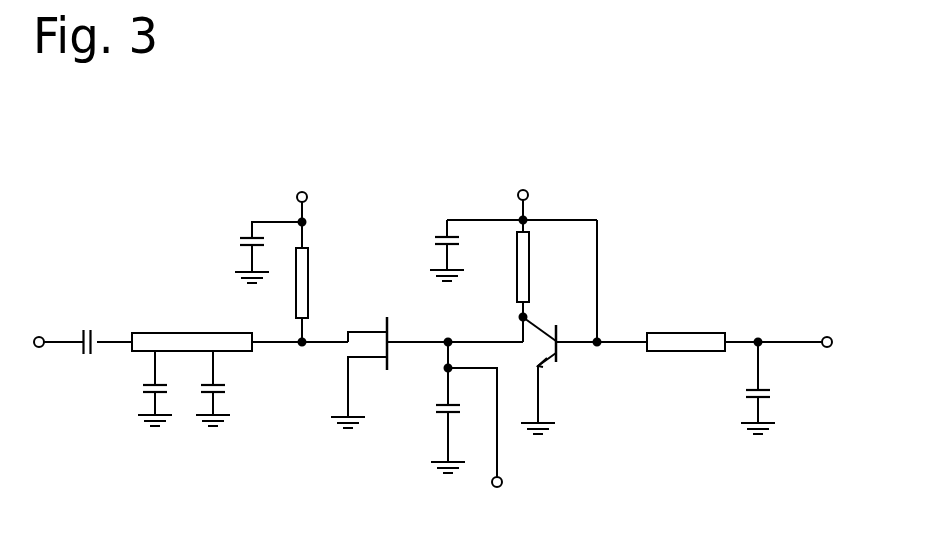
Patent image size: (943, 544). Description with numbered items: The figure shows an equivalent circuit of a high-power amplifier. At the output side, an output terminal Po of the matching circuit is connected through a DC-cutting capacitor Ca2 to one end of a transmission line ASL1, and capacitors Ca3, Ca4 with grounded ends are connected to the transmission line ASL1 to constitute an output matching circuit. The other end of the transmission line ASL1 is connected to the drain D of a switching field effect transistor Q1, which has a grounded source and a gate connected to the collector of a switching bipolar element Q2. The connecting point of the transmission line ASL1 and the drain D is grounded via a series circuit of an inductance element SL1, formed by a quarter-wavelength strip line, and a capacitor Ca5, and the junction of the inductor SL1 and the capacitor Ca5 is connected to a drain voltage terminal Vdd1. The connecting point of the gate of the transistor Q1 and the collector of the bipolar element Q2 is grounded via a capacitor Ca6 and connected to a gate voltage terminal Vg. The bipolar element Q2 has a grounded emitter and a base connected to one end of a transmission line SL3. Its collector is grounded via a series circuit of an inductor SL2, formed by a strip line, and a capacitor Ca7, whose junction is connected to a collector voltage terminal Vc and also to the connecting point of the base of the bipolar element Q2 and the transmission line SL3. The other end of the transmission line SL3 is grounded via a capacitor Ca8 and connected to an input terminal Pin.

The output terminal Po is at (22, 342).
The DC-cutting capacitor Ca2 is at (91, 332).
The transmission line ASL1 is at (192, 332).
The capacitor Ca3 is at (140, 388).
The capacitor Ca4 is at (228, 388).
The drain voltage terminal Vdd1 is at (318, 208).
The inductance element SL1 is at (323, 295).
The capacitor Ca5 is at (254, 252).
The switching field effect transistor Q1 is at (374, 367).
The drain D is at (343, 320).
The gate voltage terminal Vg is at (481, 427).
The capacitor Ca6 is at (434, 420).
The collector voltage terminal Vc is at (522, 252).
The inductor SL2 is at (544, 287).
The capacitor Ca7 is at (432, 250).
The switching bipolar element Q2 is at (553, 372).
The transmission line SL3 is at (686, 331).
The input terminal Pin is at (846, 341).
The capacitor Ca8 is at (773, 388).